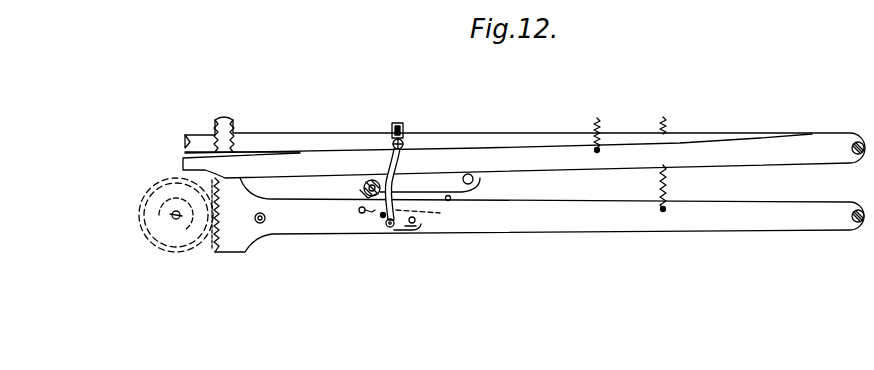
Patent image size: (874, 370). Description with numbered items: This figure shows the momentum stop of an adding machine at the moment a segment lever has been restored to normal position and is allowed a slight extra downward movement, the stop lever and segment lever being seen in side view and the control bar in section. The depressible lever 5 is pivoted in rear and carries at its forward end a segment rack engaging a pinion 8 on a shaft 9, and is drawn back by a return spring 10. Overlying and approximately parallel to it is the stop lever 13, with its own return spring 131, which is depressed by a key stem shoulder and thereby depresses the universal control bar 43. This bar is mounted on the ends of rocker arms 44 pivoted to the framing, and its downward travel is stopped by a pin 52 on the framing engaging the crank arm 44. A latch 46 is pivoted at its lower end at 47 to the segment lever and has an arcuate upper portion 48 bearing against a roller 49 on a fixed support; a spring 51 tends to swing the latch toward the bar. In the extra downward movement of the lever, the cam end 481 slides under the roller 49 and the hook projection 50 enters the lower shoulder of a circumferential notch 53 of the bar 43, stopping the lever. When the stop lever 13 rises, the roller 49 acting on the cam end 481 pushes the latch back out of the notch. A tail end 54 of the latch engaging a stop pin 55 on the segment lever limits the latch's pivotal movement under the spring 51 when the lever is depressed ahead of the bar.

The depressible lever 5 is at (539, 215).
The pinion 8 is at (207, 236).
The shaft 9 is at (176, 215).
The return spring 10 is at (670, 123).
The stop lever 13 is at (524, 147).
The return spring of stop lever 131 is at (602, 120).
The universal control bar 43 is at (350, 205).
The rocker arm 44 is at (430, 182).
The latch 46 is at (402, 210).
The latch pivot 47 is at (394, 236).
The arcuate upper portion 48 is at (386, 160).
The cam end 481 is at (406, 135).
The roller 49 is at (404, 126).
The hook projection 50 is at (368, 178).
The spring 51 is at (366, 216).
The pin 52 is at (482, 192).
The circumferential notch 53 is at (358, 188).
The tail end 54 is at (413, 235).
The stop pin 55 is at (413, 223).